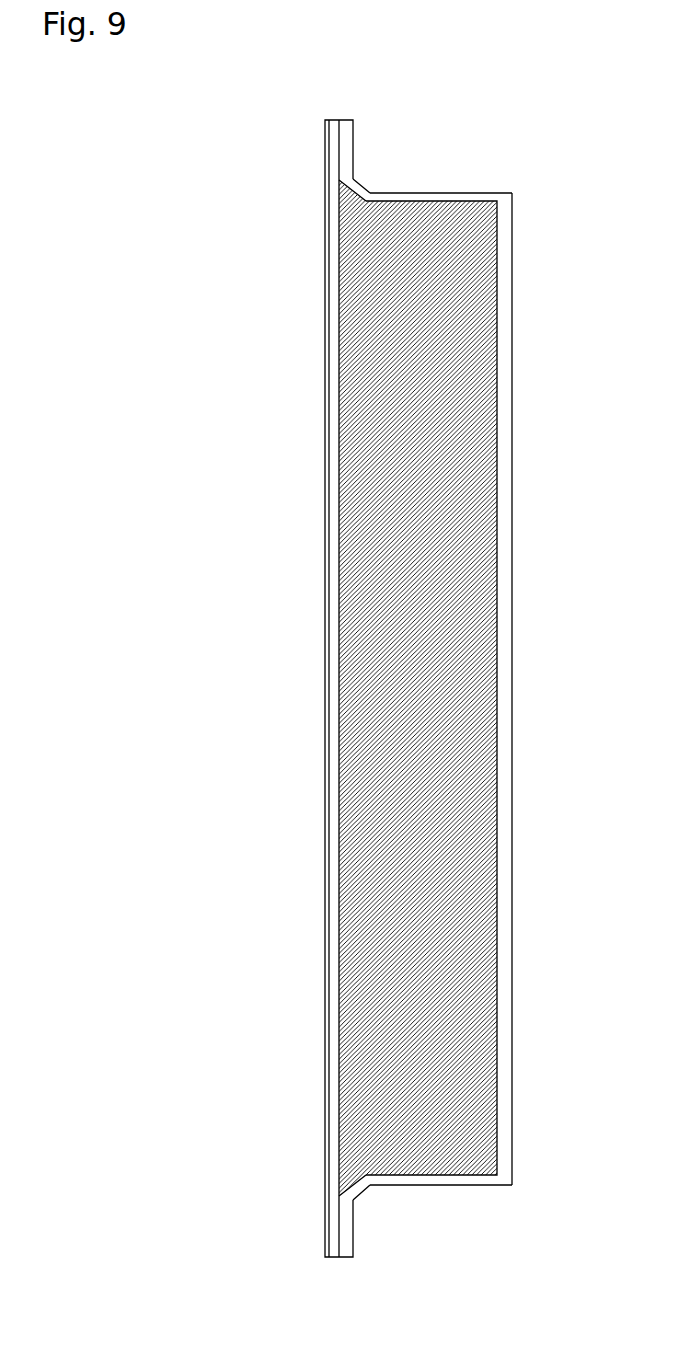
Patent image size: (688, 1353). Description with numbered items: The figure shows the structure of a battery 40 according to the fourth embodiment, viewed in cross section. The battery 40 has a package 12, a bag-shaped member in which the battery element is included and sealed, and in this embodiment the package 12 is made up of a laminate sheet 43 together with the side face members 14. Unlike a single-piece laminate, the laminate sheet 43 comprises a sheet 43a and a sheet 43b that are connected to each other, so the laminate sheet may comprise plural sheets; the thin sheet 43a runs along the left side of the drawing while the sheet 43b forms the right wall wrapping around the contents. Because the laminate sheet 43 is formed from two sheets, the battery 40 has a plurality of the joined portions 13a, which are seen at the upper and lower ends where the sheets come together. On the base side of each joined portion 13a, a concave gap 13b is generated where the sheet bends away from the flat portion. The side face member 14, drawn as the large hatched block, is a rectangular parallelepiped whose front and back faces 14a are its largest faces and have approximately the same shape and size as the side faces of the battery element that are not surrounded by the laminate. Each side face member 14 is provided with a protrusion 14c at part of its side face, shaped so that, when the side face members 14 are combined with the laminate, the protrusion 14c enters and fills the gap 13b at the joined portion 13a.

The battery 40 is at (231, 101).
The package 12 is at (215, 309).
The joined portion 13a is at (318, 150).
The gap 13b is at (357, 181).
The side face member 14 is at (338, 652).
The front and back faces 14a is at (372, 720).
The protrusion 14c is at (340, 198).
The laminate sheet 43 is at (305, 274).
The sheet 43a is at (331, 462).
The sheet 43b is at (509, 462).